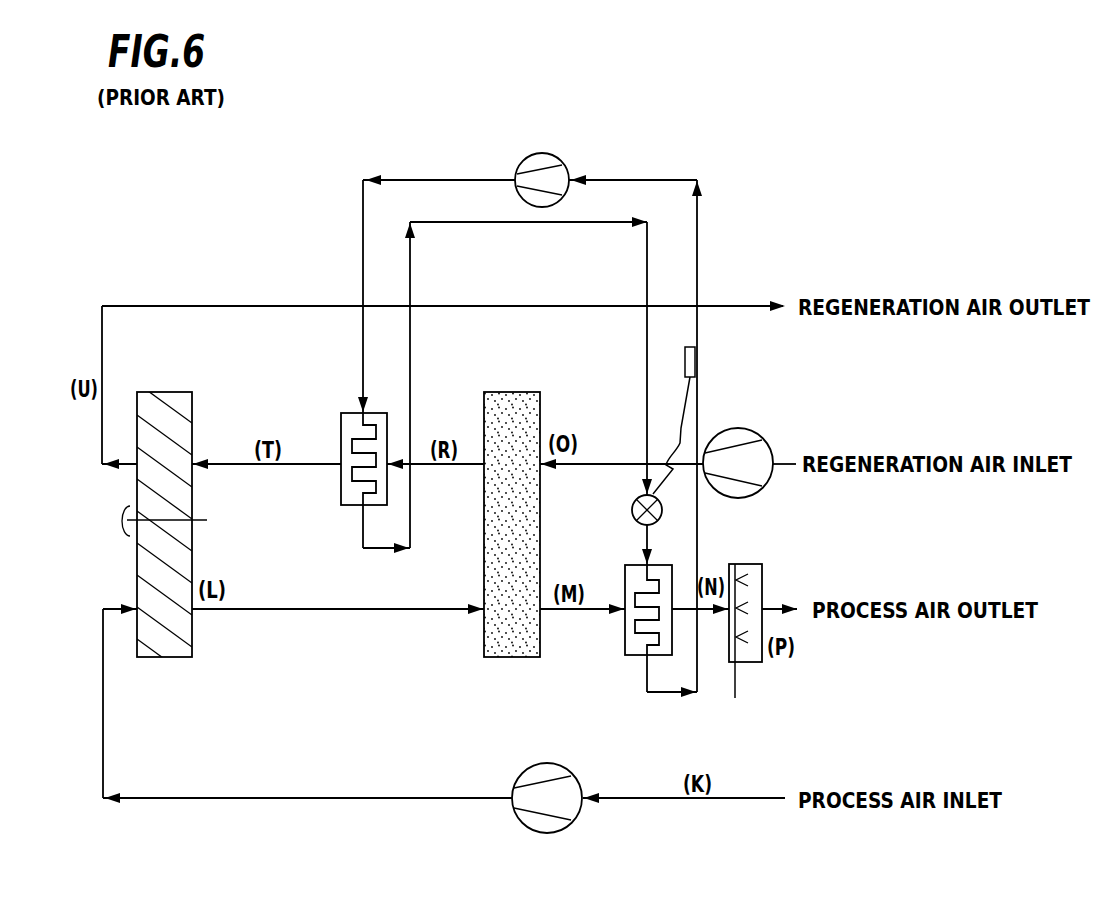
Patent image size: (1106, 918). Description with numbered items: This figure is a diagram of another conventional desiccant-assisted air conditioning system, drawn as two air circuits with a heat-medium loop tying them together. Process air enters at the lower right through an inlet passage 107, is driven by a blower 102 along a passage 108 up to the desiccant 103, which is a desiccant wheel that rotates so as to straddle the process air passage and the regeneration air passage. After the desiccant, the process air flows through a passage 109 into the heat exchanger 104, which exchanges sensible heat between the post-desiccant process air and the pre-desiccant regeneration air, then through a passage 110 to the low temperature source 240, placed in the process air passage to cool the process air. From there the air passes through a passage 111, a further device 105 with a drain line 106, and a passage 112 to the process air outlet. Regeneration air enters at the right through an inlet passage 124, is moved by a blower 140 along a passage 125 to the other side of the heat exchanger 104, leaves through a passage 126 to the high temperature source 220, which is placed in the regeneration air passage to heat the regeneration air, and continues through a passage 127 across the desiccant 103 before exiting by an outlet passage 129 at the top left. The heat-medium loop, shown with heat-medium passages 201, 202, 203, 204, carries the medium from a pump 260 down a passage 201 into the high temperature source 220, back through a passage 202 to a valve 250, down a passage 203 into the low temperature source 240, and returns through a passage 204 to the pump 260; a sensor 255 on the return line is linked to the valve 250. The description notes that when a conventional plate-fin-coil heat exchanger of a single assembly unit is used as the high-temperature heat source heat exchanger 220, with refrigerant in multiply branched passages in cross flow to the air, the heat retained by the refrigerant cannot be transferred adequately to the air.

The process air blower 102 is at (540, 764).
The desiccant 103 is at (137, 545).
The heat exchanger 104 is at (483, 632).
The cooler 105 is at (750, 563).
The drain line 106 is at (736, 688).
The process air inlet passage 107 is at (672, 800).
The process air passage 108 is at (250, 800).
The process air passage 109 is at (322, 611).
The process air passage 110 is at (545, 610).
The process air passage 111 is at (702, 613).
The process air outlet passage 112 is at (770, 607).
The regeneration air inlet passage 124 is at (780, 464).
The regeneration air passage 125 is at (605, 463).
The regeneration air passage 126 is at (443, 466).
The regeneration air passage 127 is at (302, 466).
The regeneration air outlet passage 129 is at (101, 444).
The regeneration air blower 140 is at (732, 430).
The heat medium passage 201 is at (363, 209).
The heat medium passage 202 is at (366, 551).
The heat medium passage 203 is at (645, 530).
The heat medium passage 204 is at (697, 232).
The high temperature source 220 is at (341, 414).
The low temperature air source 240 is at (630, 657).
The flow control valve 250 is at (632, 512).
The temperature sensor 255 is at (697, 357).
The heat medium pump 260 is at (536, 158).